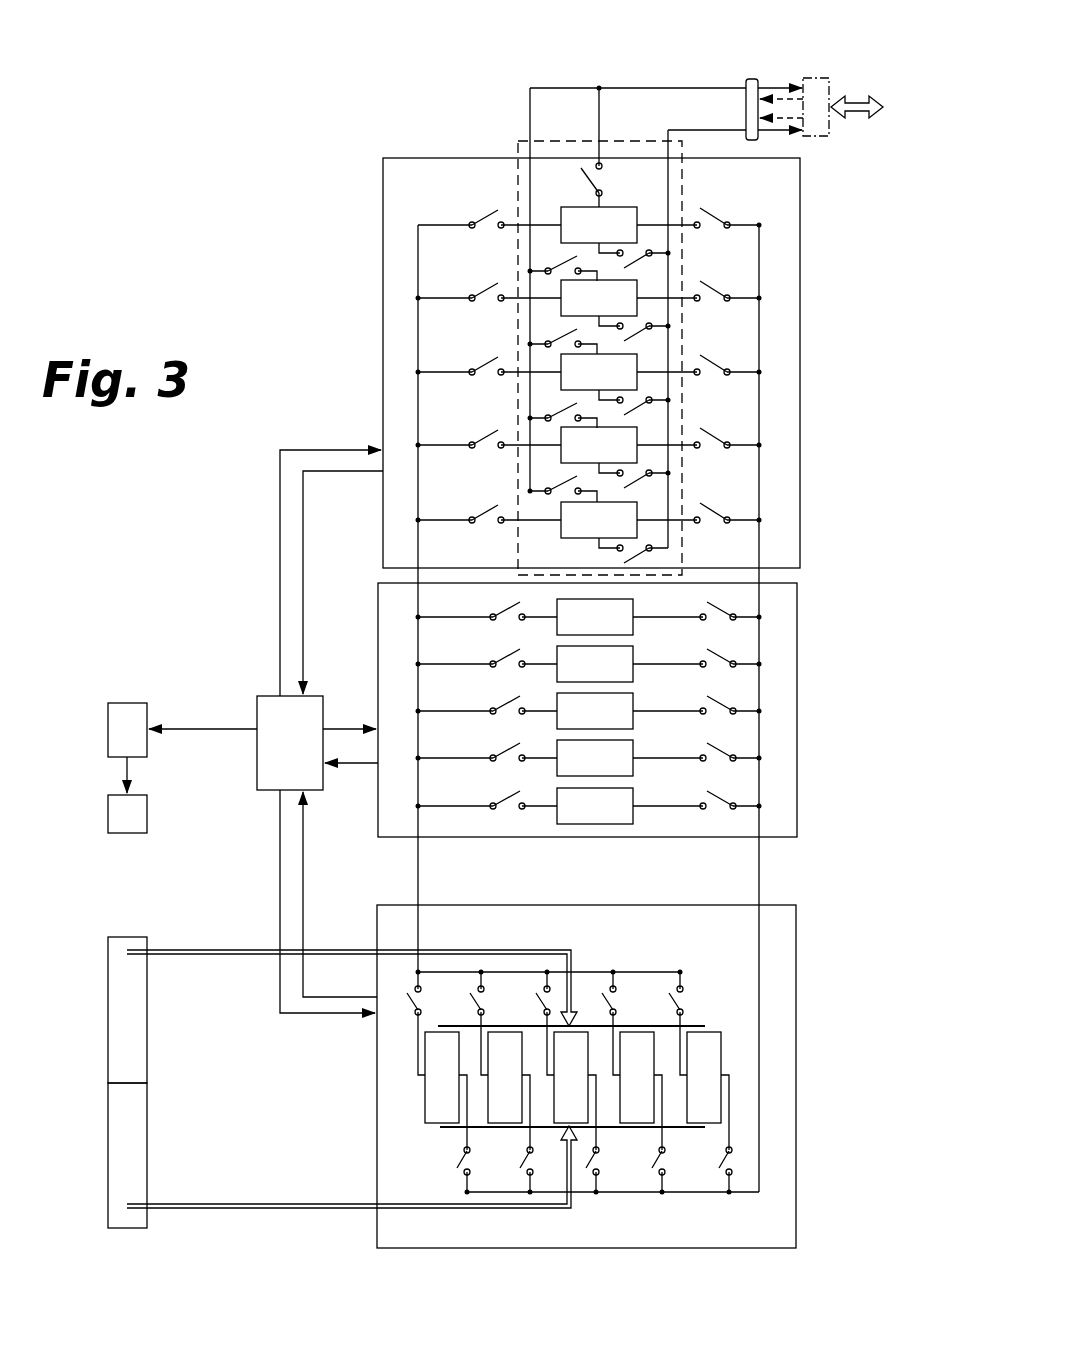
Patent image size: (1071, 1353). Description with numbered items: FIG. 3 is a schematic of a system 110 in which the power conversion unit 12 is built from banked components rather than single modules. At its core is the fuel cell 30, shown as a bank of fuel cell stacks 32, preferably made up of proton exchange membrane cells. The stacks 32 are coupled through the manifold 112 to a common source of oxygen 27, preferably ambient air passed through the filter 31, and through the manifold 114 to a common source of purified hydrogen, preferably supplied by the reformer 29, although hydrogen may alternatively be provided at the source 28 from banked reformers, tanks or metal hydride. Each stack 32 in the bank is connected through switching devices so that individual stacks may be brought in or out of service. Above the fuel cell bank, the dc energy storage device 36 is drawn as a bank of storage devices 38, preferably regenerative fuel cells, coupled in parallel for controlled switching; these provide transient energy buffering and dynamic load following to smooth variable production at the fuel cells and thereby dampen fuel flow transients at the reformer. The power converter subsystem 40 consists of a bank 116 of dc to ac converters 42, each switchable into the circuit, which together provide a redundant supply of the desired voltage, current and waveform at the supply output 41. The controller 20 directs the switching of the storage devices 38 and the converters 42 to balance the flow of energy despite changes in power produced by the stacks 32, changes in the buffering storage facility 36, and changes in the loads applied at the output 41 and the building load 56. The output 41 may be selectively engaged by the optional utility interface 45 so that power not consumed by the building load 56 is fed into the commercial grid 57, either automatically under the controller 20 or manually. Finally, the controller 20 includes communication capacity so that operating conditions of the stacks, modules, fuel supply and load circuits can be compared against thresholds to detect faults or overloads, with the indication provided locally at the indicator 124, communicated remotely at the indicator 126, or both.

The system 110 is at (188, 248).
The power conversion unit 12 is at (331, 247).
The supply output 41 is at (577, 88).
The building load 56 is at (750, 77).
The utility interface 45 is at (816, 77).
The commercial grid 57 is at (858, 113).
The bank of dc to ac converters 116 is at (517, 150).
The power converter subsystem 40 is at (379, 405).
The converter 42 is at (637, 306).
The dc energy storage device 36 is at (375, 650).
The storage device 38 is at (633, 703).
The local indicator 124 is at (127, 702).
The controller 20 is at (257, 743).
The remote indicator 126 is at (147, 818).
The filter 31 is at (135, 1022).
The oxygen source 27 is at (103, 1008).
The reformer 29 is at (135, 1148).
The hydrogen source 28 is at (103, 1129).
The manifold 112 is at (637, 1025).
The fuel cell stack 32 is at (723, 1057).
The manifold 114 is at (637, 1128).
The fuel cell 30 is at (574, 1251).